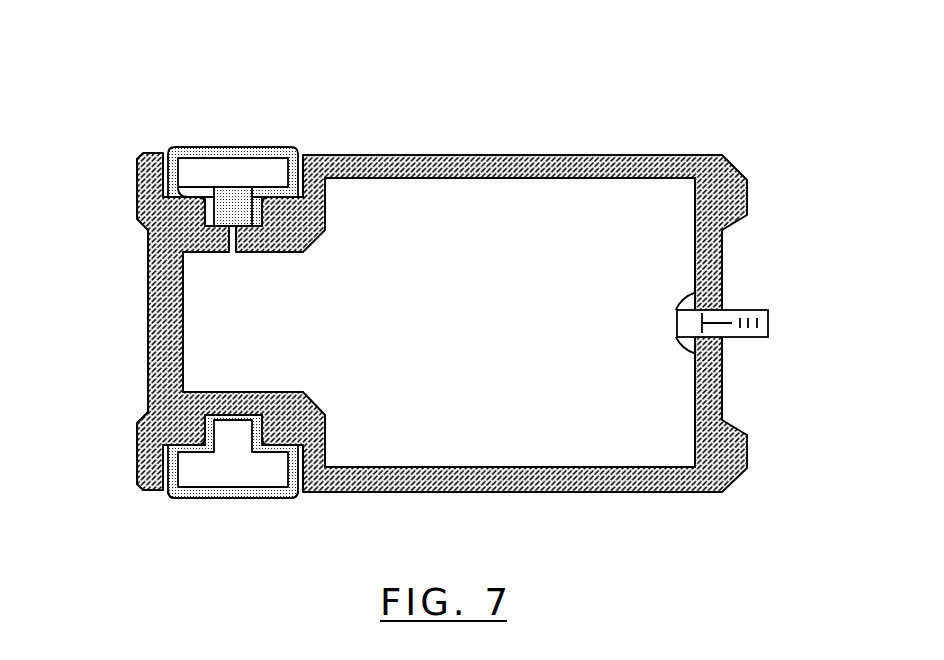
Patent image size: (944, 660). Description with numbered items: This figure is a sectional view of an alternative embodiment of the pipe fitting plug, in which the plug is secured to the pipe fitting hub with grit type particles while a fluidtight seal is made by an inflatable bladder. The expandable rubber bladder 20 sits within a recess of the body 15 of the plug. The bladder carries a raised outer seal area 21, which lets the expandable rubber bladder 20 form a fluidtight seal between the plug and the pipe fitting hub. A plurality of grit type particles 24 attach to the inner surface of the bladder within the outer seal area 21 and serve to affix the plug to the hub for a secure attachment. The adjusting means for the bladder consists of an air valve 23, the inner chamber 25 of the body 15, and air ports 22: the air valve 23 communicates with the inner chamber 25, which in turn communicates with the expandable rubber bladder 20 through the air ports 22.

The body 15 is at (137, 290).
The expandable rubber bladder 20 is at (232, 452).
The raised outer seal area 21 is at (280, 498).
The air ports 22 is at (233, 257).
The air valve 23 is at (767, 308).
The grit type particles 24 is at (218, 142).
The inner chamber 25 is at (572, 423).